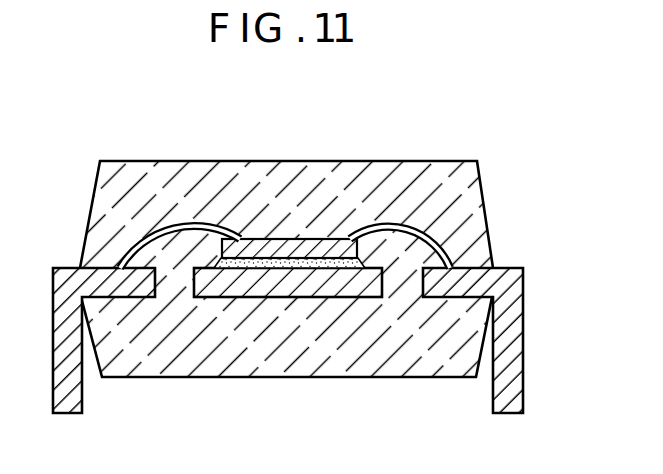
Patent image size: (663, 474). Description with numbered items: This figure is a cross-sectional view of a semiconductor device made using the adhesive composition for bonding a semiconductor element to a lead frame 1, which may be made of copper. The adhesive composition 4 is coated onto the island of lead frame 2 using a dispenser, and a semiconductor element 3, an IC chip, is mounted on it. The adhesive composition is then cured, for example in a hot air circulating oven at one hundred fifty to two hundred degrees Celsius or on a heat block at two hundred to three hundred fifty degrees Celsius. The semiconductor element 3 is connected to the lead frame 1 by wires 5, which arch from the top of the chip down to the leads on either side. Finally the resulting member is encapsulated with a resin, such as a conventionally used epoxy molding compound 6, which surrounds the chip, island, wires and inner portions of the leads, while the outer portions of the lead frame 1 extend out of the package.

The lead frame 1 is at (518, 281).
The island of lead frame 2 is at (236, 290).
The semiconductor element 3 is at (297, 241).
The adhesive composition 4 is at (339, 264).
The wire 5 is at (194, 226).
The epoxy molding compound 6 is at (450, 355).